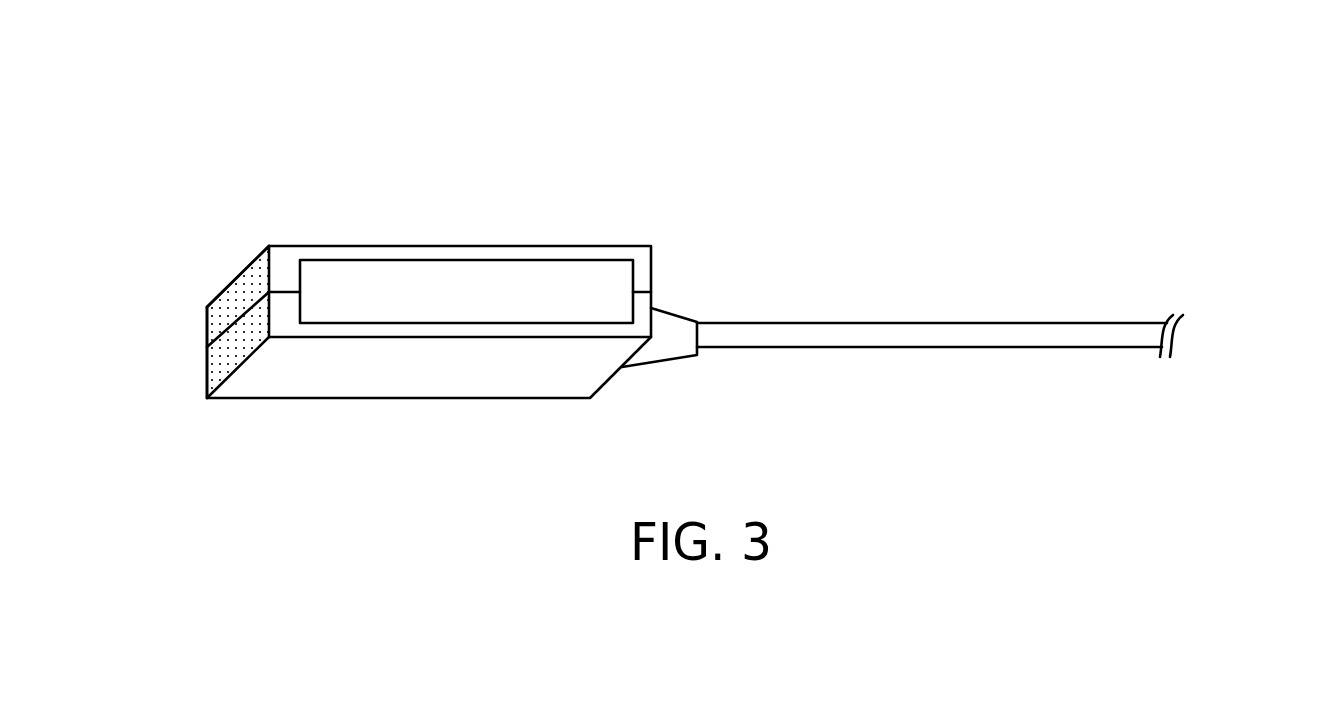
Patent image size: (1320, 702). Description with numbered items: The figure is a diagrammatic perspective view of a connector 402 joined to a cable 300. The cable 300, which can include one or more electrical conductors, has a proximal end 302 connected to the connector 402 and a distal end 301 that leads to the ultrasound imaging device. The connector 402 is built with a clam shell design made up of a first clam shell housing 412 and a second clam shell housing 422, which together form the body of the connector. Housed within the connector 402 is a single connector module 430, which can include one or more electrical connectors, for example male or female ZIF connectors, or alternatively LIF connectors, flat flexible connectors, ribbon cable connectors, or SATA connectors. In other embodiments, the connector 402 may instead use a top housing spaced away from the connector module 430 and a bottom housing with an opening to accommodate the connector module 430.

The connector 402 is at (221, 130).
The first clam shell housing 412 is at (390, 388).
The second clam shell housing 422 is at (235, 282).
The connector module 430 is at (490, 273).
The proximal end 302 is at (698, 322).
The cable 300 is at (860, 322).
The distal end 301 is at (1178, 339).